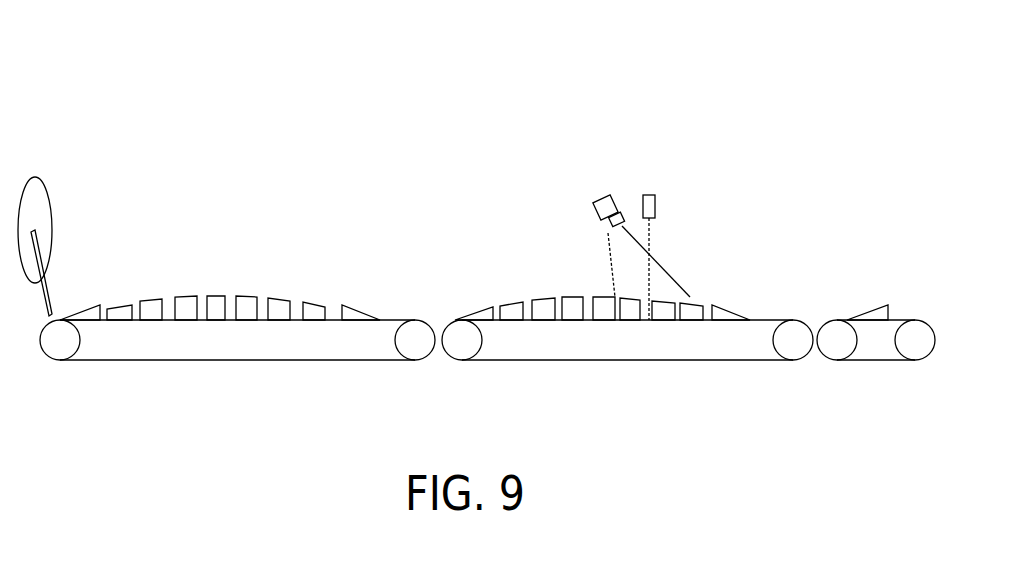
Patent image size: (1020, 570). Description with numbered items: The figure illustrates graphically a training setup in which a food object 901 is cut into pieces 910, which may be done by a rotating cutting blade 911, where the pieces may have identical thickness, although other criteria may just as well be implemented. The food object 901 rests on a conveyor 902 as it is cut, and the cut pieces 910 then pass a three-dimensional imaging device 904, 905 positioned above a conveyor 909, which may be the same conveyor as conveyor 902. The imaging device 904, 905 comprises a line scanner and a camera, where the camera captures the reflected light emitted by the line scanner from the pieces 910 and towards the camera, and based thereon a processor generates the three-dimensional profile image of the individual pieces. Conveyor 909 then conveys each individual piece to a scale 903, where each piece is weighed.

The food object 901 is at (207, 225).
The conveyor 902 is at (203, 343).
The scale 903 is at (870, 352).
The 3D imaging device 904 is at (610, 197).
The 3D imaging device 905 is at (650, 193).
The conveyor 909 is at (630, 343).
The pieces 910 is at (697, 308).
The rotating cutting blade 911 is at (50, 198).